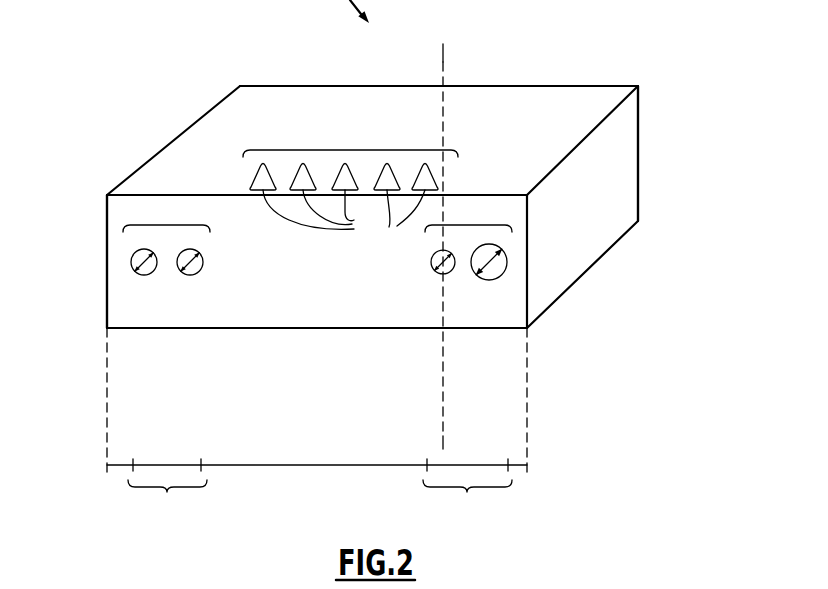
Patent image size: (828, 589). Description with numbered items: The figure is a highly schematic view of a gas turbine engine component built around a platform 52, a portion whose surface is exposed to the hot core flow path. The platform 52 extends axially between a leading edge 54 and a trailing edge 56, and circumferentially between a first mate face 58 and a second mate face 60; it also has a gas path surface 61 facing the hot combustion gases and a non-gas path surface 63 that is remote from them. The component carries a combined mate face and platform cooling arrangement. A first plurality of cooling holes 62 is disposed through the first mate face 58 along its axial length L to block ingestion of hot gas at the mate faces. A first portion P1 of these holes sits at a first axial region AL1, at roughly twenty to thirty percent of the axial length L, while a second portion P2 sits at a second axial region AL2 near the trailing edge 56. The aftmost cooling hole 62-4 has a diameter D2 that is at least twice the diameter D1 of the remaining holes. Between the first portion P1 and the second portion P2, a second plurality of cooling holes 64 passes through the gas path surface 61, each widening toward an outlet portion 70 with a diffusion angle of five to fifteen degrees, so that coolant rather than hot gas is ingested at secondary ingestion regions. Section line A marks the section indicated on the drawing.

The platform 52 is at (528, 95).
The leading edge 54 is at (107, 247).
The trailing edge 56 is at (619, 165).
The first mate face 58 is at (413, 318).
The second mate face 60 is at (630, 72).
The gas path surface 61 is at (354, 124).
The first plurality of cooling holes 62 is at (150, 298).
The aftmost cooling hole 62-4 is at (506, 254).
The non-gas path surface 63 is at (277, 344).
The second plurality of cooling holes 64 is at (366, 151).
The outlet portion 70 is at (344, 215).
The diameter D1 is at (155, 270).
The diameter D2 is at (508, 267).
The first portion P1 is at (168, 226).
The second portion P2 is at (468, 226).
The first axial region AL1 is at (167, 491).
The second axial region AL2 is at (467, 491).
The axial length L is at (300, 467).
The section line A- A is at (437, 48).